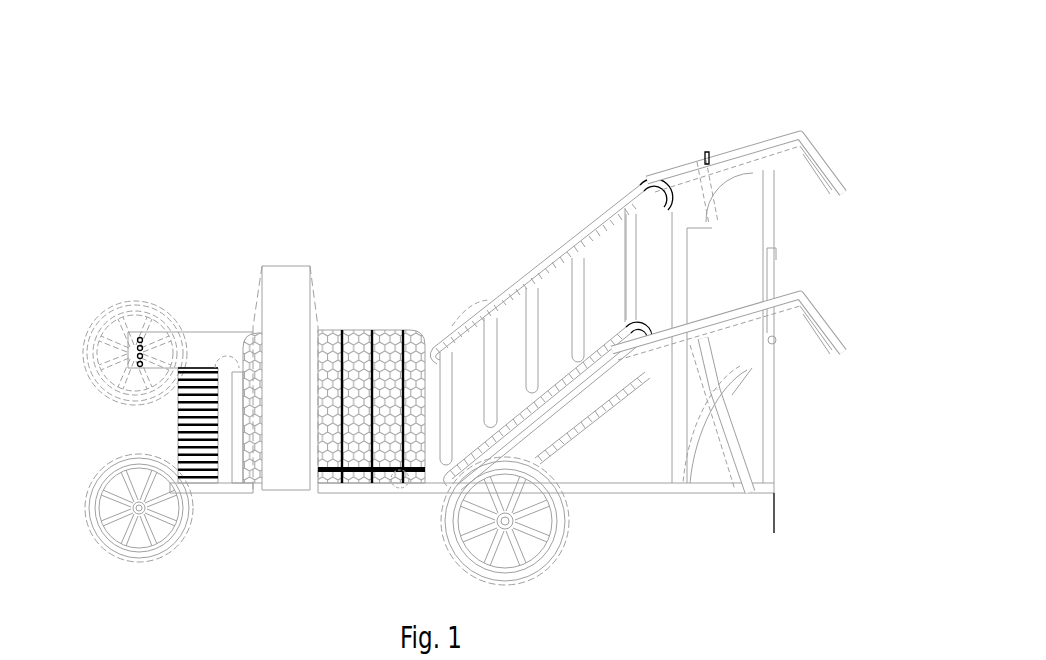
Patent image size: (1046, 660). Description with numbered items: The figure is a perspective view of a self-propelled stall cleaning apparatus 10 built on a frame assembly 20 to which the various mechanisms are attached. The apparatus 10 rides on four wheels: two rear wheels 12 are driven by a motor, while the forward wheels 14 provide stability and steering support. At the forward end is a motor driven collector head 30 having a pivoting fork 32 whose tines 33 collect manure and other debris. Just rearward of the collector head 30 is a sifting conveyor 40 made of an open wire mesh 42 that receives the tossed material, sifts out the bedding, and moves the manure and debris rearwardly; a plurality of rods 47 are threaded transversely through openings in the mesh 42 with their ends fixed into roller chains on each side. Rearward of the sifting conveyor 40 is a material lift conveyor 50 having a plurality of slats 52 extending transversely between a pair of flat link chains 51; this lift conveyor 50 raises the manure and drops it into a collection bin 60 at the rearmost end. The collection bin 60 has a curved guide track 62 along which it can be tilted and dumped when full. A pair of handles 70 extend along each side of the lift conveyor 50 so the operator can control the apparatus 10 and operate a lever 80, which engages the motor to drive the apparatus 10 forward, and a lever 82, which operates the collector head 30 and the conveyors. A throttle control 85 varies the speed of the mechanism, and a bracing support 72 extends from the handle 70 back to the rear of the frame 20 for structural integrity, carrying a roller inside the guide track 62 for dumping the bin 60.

The stall cleaning apparatus 10 is at (542, 103).
The rear wheels 12 is at (545, 572).
The forward wheels 14 is at (100, 483).
The frame assembly 20 is at (196, 327).
The collector head 30 is at (220, 372).
The pivoting fork 32 is at (182, 420).
The tines 33 is at (198, 452).
The sifting conveyor 40 is at (384, 318).
The open wire mesh 42 is at (351, 332).
The rods 47 is at (372, 458).
The material lift conveyor 50 is at (560, 263).
The flat link chains 51 is at (523, 274).
The slats 52 is at (580, 260).
The collection bin 60 is at (763, 413).
The guide track 62 is at (708, 443).
The handles 70 is at (775, 140).
The bracing support 72 is at (712, 198).
The lever 80 is at (826, 196).
The lever 82 is at (829, 358).
The throttle control 85 is at (707, 150).